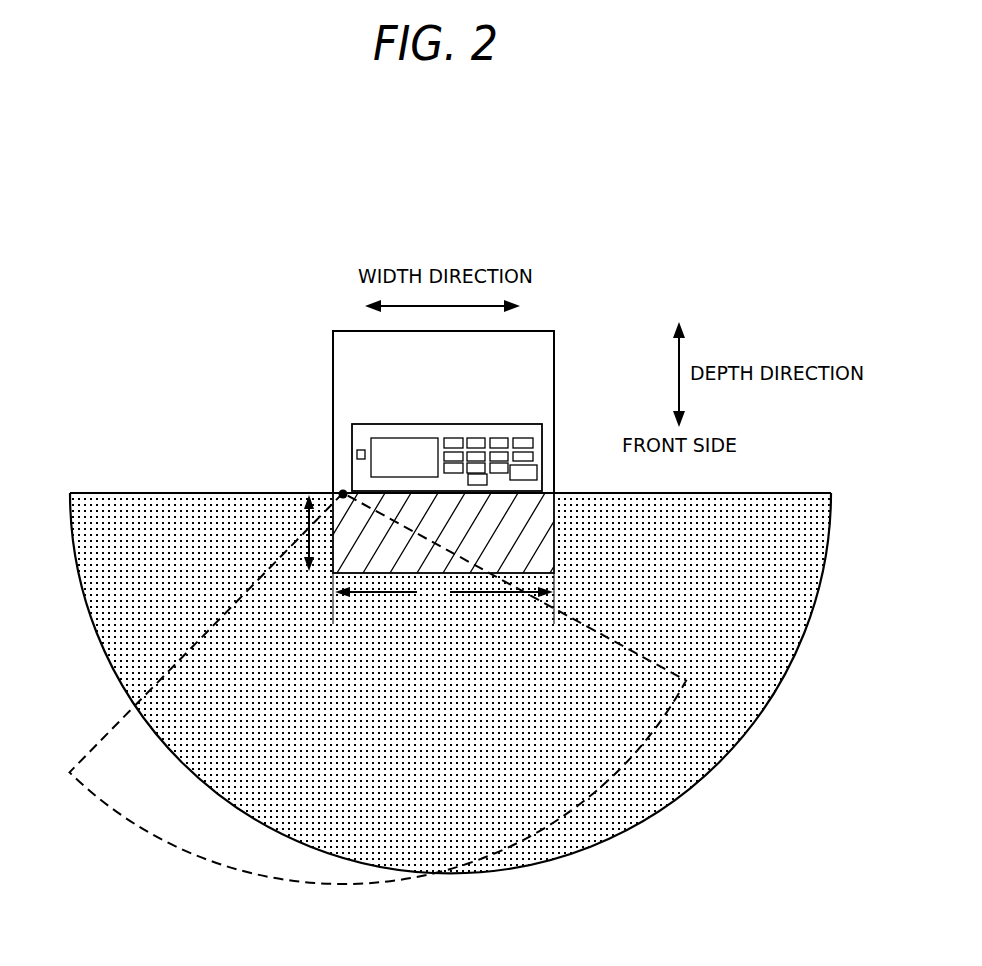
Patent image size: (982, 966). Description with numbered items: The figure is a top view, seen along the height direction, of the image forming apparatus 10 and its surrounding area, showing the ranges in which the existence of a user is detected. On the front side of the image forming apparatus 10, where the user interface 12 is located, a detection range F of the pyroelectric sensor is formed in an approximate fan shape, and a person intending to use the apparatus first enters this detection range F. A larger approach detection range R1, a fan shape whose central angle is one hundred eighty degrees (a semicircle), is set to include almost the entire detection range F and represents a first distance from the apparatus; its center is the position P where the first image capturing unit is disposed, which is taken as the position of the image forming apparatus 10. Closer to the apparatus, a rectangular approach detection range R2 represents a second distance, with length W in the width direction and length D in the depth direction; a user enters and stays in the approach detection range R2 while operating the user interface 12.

The image forming apparatus 10 is at (554, 382).
The user interface 12 is at (543, 447).
The position of the first image capturing unit P is at (341, 493).
The approach detection range R1 is at (617, 836).
The approach detection range R2 is at (592, 500).
The detection range F is at (232, 869).
The length in the depth direction D is at (300, 533).
The length in the width direction W is at (443, 598).